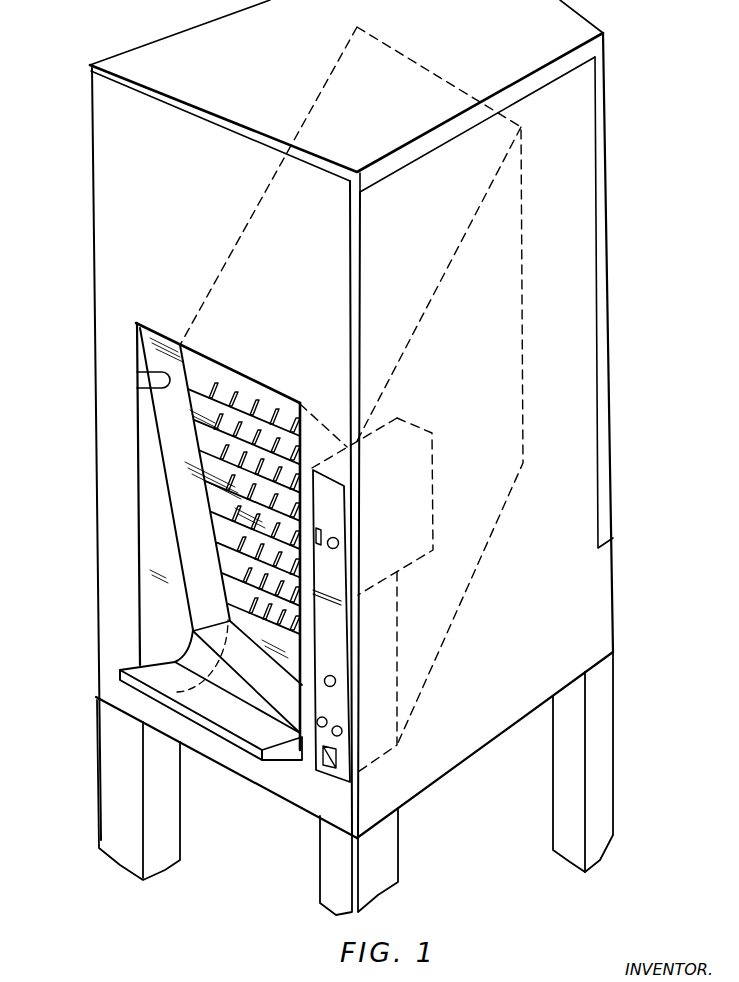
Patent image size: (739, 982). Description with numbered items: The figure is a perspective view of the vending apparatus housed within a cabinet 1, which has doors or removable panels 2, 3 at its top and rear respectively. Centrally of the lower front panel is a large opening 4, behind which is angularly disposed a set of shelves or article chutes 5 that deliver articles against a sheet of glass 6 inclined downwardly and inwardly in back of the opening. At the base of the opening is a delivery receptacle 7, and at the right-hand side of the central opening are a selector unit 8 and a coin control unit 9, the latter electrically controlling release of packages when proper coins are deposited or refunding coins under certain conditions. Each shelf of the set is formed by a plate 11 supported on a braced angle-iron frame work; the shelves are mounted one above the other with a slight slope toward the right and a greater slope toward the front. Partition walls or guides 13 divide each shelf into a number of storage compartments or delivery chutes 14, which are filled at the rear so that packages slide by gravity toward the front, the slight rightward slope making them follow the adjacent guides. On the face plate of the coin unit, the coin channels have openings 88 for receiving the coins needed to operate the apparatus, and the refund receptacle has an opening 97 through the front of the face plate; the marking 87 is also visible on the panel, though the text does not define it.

The cabinet 1 is at (355, 457).
The top door or removable panel 2 is at (547, 30).
The rear door or removable panel 3 is at (603, 172).
The opening 4 is at (165, 388).
The set of shelves or article chutes 5 is at (484, 355).
The sheet of glass 6 is at (181, 496).
The delivery receptacle 7 is at (292, 750).
The selector unit 8 is at (420, 500).
The coin control unit 9 is at (397, 645).
The plate 11 is at (207, 495).
The partition walls or guides 13 is at (268, 405).
The storage compartments or delivery chutes 14 is at (185, 547).
The coin opening 88 is at (341, 646).
The display 87 is at (340, 648).
The refund receptacle opening 97 is at (328, 637).